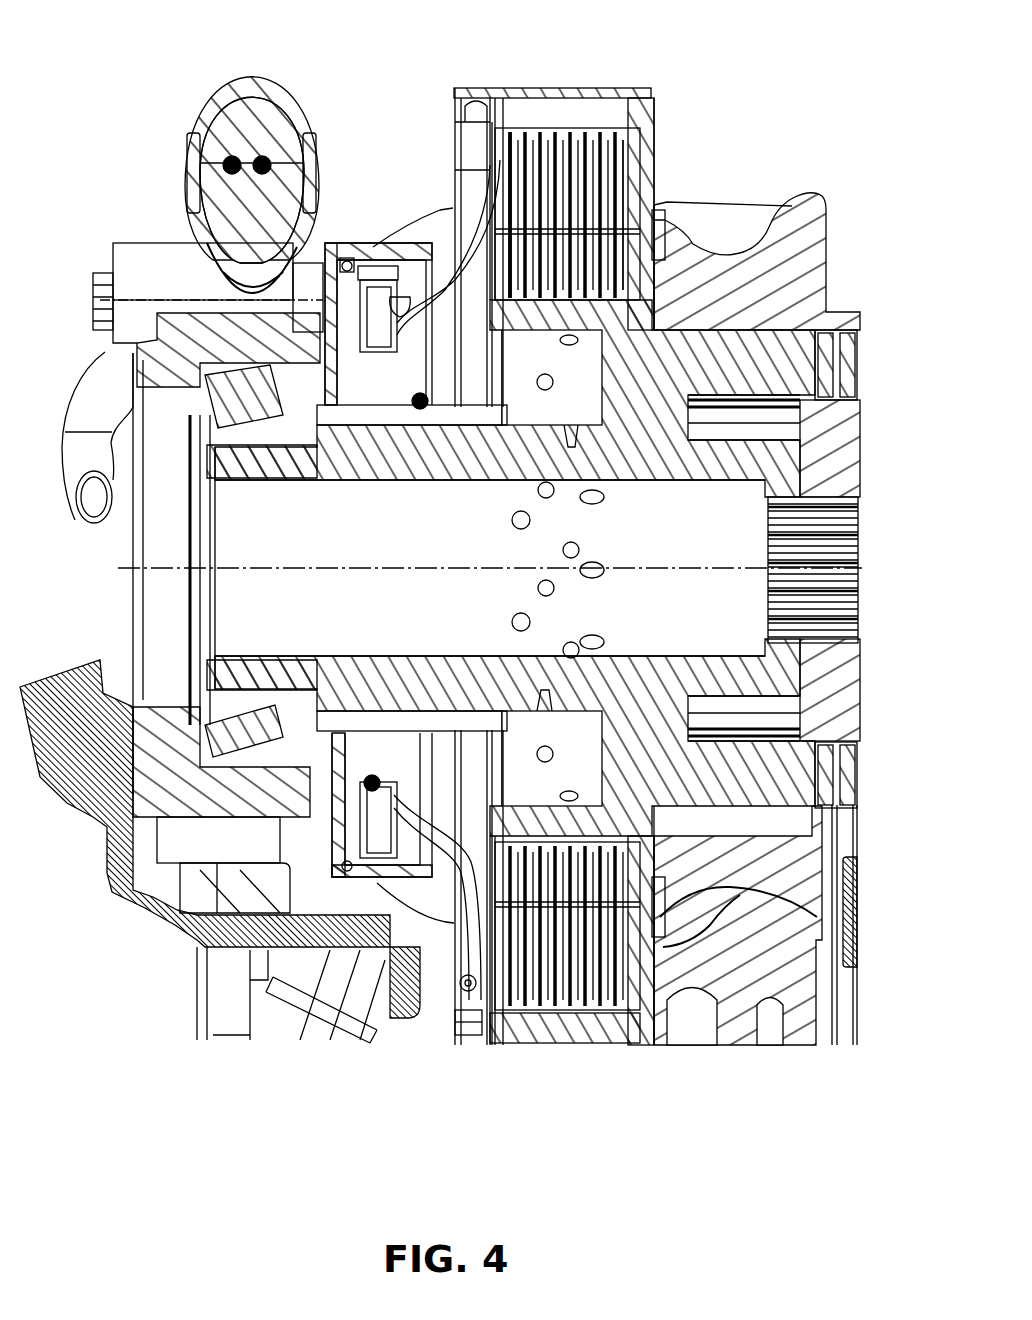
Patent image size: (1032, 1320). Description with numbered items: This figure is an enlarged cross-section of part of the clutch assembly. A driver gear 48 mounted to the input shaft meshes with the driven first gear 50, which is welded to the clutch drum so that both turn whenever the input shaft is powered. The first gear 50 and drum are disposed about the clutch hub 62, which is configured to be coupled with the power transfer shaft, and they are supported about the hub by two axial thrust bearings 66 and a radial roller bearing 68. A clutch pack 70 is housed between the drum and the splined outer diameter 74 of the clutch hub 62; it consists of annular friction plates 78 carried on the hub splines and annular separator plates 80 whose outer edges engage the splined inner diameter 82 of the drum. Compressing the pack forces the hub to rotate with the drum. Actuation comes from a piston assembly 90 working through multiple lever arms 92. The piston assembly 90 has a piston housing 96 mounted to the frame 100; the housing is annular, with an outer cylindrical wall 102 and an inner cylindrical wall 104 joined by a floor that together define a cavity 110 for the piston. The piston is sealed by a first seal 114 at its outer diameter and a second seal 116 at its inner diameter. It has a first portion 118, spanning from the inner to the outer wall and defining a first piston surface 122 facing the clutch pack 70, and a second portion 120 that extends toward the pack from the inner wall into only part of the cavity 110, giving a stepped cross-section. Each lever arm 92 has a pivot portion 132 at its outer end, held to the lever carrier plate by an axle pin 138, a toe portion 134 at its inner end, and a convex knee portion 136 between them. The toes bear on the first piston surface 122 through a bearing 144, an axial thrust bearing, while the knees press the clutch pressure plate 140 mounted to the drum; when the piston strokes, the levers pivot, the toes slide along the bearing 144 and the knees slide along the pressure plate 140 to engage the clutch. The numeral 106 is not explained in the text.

The driver gear 48 is at (728, 990).
The first gear 50 is at (795, 248).
The clutch hub 62 is at (636, 457).
The axial thrust bearings 66 is at (690, 337).
The radial roller bearing 68 is at (748, 408).
The clutch pack 70 is at (577, 110).
The outer diameter of the clutch hub 74 is at (650, 265).
The annular friction plates 78 is at (598, 130).
The annular separator plates 80 is at (617, 128).
The inner diameter of the clutch drum 82 is at (604, 1010).
The piston assembly 90 is at (360, 195).
The lever arms 92 is at (454, 133).
The piston housing 96 is at (317, 892).
The frame 100 is at (187, 340).
The outer cylindrical wall 102 is at (333, 860).
The inner cylindrical wall 104 is at (357, 885).
The casting housing 106 is at (197, 933).
The cavity 110 is at (383, 863).
The first seal 114 is at (348, 262).
The second seal 116 is at (422, 410).
The first portion of the piston 118 is at (327, 313).
The second portion of the piston 120 is at (397, 408).
The first piston surface 122 is at (366, 272).
The pivot portion 132 is at (458, 992).
The toe portion 134 is at (410, 878).
The knee portion 136 is at (487, 1010).
The axle pin 138 is at (471, 1012).
The clutch pressure plate 140 is at (503, 57).
The bearing 144 is at (373, 327).